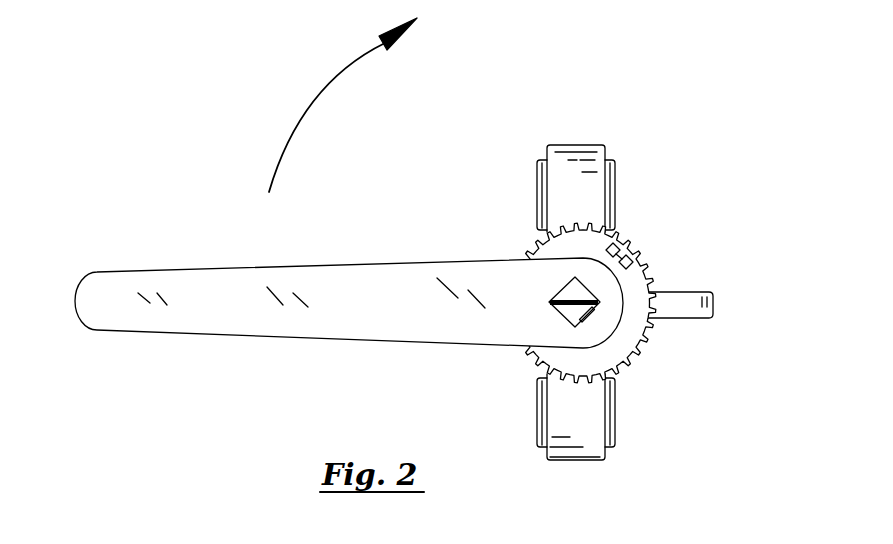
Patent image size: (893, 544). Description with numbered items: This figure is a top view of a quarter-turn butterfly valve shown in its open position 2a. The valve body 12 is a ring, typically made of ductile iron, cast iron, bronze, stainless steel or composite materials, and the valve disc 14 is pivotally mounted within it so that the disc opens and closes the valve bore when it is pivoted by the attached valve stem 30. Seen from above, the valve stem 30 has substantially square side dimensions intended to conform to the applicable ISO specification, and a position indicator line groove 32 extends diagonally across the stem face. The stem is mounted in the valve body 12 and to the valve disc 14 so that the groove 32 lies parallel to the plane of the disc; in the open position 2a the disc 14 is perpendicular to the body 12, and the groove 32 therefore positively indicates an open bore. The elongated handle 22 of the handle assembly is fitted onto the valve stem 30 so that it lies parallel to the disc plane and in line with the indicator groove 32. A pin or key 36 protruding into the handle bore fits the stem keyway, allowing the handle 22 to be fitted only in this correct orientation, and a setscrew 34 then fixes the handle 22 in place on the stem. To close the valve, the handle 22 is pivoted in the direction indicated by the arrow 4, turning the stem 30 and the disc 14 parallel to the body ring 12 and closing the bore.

The open position 2a is at (463, 208).
The direction of pivoting 4 is at (315, 107).
The valve body 12 is at (590, 192).
The valve disc 14 is at (690, 307).
The handle 22 is at (235, 290).
The valve stem 30 is at (570, 290).
The position indicator line groove 32 is at (553, 306).
The setscrew 34 is at (625, 247).
The key 36 is at (587, 313).